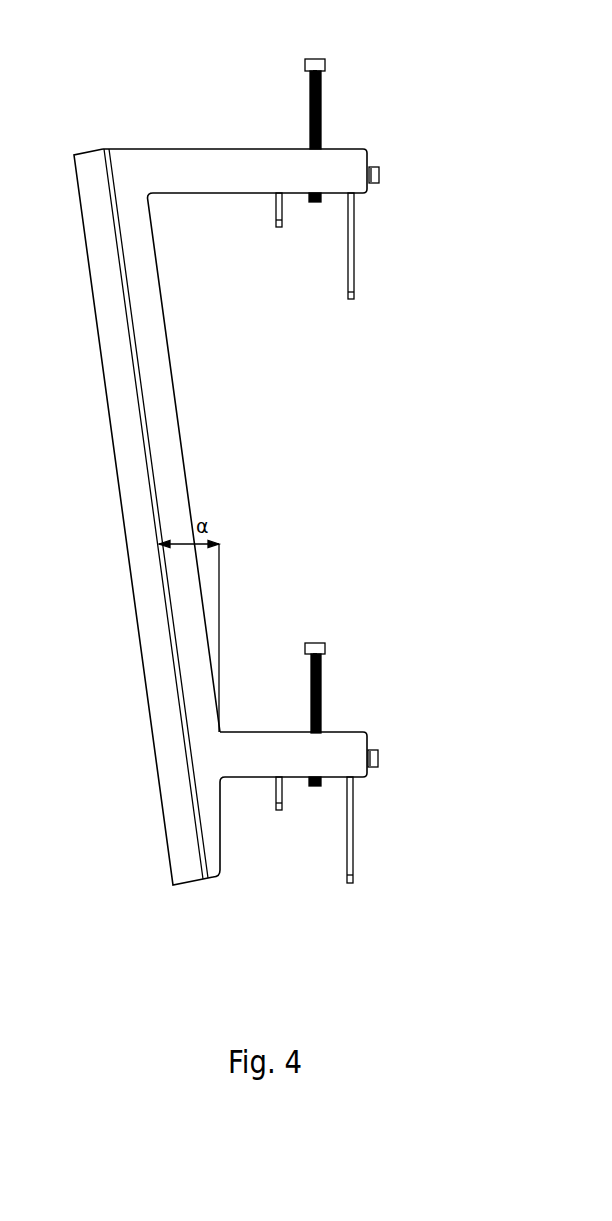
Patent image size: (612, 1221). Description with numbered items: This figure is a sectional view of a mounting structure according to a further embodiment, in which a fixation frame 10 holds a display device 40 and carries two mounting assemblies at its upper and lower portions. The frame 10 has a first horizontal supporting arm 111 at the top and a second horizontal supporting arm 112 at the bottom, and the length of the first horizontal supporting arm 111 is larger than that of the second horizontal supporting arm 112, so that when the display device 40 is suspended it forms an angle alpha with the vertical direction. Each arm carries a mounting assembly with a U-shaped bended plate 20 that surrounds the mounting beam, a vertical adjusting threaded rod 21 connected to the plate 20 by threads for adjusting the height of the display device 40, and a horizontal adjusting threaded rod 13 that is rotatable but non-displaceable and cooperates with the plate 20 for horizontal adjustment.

The fixation frame 10 is at (160, 392).
The first horizontal supporting arm 111 is at (343, 172).
The second horizontal supporting arm 112 is at (343, 755).
The horizontal adjusting threaded rod 13 is at (380, 166).
The U-shaped bended plate 20 is at (354, 248).
The vertical adjusting threaded rod 21 is at (310, 80).
The display device 40 is at (168, 785).